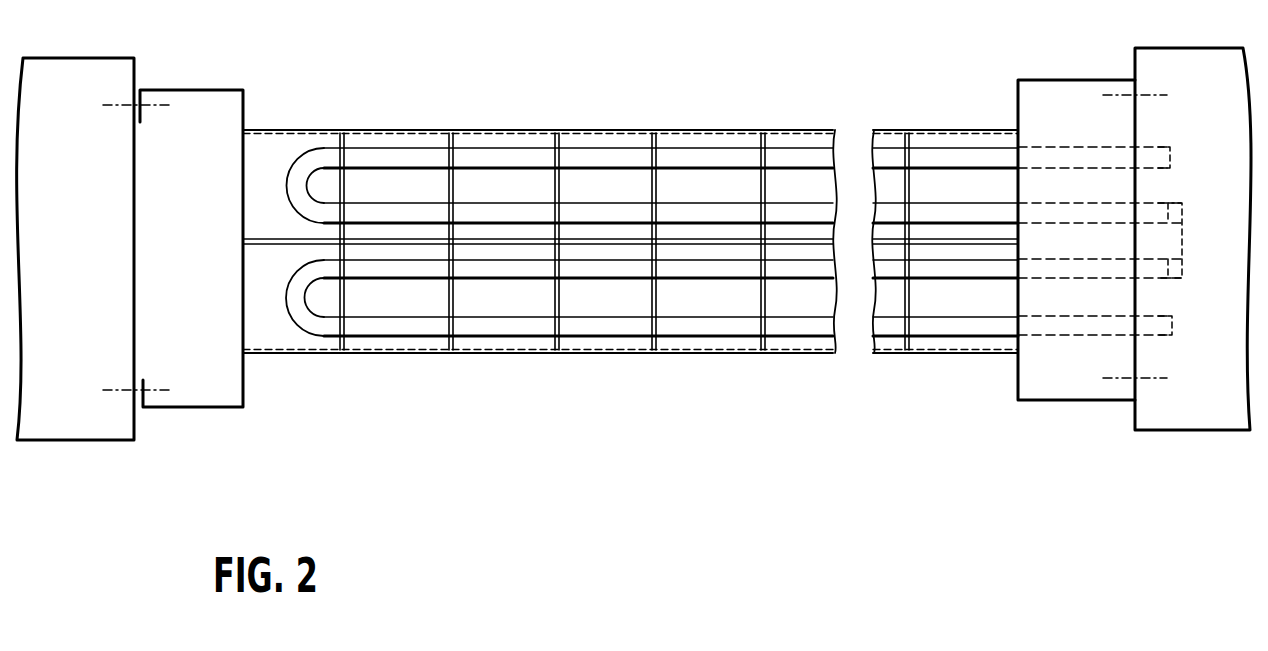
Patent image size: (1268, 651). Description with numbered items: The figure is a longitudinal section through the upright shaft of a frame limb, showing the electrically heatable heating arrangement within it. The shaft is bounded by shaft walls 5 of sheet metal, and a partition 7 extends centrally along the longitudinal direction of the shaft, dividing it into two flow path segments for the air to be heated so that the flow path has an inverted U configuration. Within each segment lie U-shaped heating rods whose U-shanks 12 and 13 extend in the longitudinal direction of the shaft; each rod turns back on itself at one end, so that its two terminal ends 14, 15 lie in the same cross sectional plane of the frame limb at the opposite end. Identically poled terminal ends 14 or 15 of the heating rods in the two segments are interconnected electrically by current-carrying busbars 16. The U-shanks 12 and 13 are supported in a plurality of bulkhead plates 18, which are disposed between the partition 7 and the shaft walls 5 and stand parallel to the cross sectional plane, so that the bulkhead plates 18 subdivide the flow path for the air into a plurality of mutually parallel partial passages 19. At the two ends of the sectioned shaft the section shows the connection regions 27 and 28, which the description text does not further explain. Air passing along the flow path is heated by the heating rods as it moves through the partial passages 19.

The shaft walls 5 is at (680, 129).
The partition 7 is at (598, 245).
The U-shank 12 is at (408, 152).
The U-shank 13 is at (492, 215).
The terminal end 14 is at (1160, 142).
The terminal end 15 is at (1168, 198).
The busbar 16 is at (1182, 247).
The bulkhead plate 18 is at (342, 137).
The partial passage 19 is at (277, 147).
The flange 27 is at (1133, 93).
The flange 28 is at (152, 88).